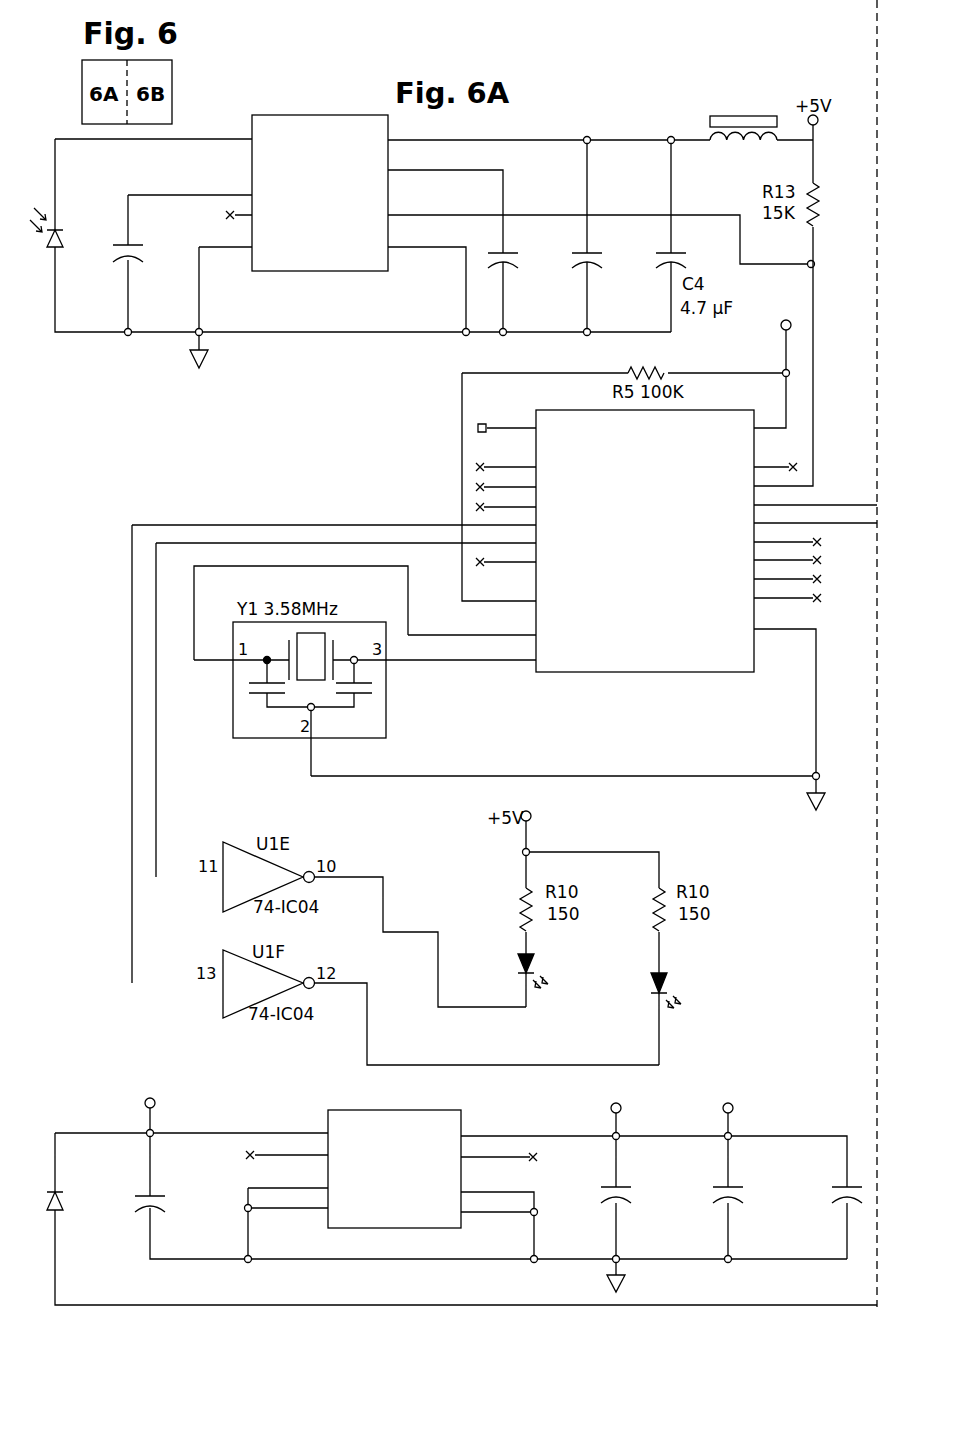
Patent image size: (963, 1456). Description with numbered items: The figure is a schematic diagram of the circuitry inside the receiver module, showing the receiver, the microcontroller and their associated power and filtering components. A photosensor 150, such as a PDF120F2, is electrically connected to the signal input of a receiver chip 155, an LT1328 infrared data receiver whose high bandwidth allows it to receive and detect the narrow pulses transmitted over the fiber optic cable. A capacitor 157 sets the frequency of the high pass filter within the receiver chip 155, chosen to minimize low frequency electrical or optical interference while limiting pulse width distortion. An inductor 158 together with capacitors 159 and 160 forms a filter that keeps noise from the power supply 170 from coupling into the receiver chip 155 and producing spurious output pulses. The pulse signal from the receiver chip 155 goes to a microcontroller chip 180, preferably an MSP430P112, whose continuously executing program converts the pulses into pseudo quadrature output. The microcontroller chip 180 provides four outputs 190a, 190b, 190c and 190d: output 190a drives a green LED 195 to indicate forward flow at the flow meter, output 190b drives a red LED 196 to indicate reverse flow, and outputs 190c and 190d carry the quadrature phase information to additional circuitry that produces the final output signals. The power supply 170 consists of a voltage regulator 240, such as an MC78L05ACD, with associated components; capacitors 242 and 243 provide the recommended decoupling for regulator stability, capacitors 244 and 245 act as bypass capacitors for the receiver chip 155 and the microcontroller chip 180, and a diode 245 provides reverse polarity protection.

The photosensor 150 is at (60, 243).
The receiver chip 155 is at (340, 272).
The capacitor 157 is at (142, 247).
The inductor 158 is at (716, 116).
The capacitor 159 is at (512, 253).
The capacitor 160 is at (594, 253).
The power supply 170 is at (184, 1058).
The microcontroller chip 180 is at (730, 685).
The output 190a is at (462, 518).
The output 190b is at (462, 554).
The output 190c is at (810, 504).
The output 190d is at (812, 522).
The green LED 195 is at (663, 972).
The red LED 196 is at (516, 957).
The voltage regulator 240 is at (452, 1229).
The capacitor 242 is at (160, 1196).
The capacitor 243 is at (832, 1190).
The capacitor 244 is at (738, 1188).
The capacitor / diode 245 is at (62, 1212).